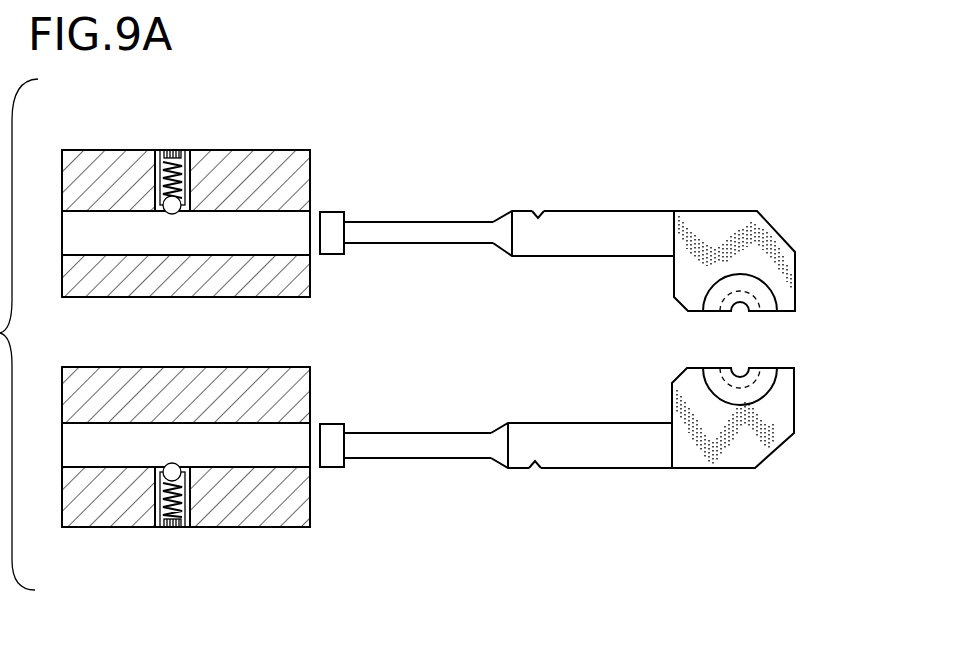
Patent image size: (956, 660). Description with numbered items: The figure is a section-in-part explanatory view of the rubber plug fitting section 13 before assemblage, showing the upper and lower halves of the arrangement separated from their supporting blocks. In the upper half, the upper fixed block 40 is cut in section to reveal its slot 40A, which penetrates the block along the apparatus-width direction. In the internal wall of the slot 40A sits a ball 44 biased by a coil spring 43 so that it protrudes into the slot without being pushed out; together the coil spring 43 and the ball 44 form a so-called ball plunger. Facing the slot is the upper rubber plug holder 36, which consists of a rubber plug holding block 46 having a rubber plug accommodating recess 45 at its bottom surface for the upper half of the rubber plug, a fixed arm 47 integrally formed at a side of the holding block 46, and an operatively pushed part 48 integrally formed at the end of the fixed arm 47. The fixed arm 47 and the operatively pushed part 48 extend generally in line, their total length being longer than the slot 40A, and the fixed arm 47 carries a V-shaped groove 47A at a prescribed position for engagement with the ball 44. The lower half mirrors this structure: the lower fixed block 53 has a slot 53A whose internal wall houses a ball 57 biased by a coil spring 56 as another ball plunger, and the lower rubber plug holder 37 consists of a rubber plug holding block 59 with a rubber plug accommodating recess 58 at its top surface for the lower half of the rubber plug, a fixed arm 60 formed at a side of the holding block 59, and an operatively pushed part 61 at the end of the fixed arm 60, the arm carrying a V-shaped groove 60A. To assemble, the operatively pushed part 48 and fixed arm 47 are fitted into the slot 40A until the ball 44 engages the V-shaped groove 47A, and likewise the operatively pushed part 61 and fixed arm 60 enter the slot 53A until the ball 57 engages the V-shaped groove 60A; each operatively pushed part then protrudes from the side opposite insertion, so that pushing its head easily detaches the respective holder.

The rubber plug fitting section 13 is at (474, 182).
The upper rubber plug holder 36 is at (680, 211).
The lower rubber plug holder 37 is at (692, 469).
The upper fixed block 40 is at (251, 150).
The slot 40A is at (278, 222).
The coil spring 43 is at (185, 150).
The ball 44 is at (168, 203).
The rubber plug accommodating recess 45 is at (712, 304).
The rubber plug holding block 46 is at (752, 215).
The fixed arm 47 is at (625, 218).
The V-shaped groove 47A is at (538, 212).
The operatively pushed part 48 is at (428, 236).
The lower fixed block 53 is at (190, 370).
The slot 53A is at (268, 457).
The coil spring 56 is at (203, 528).
The ball 57 is at (166, 476).
The rubber plug accommodating recess 58 is at (715, 378).
The rubber plug holding block 59 is at (763, 463).
The fixed arm 60 is at (628, 460).
The V-shaped groove 60A is at (536, 469).
The operatively pushed part 61 is at (430, 452).